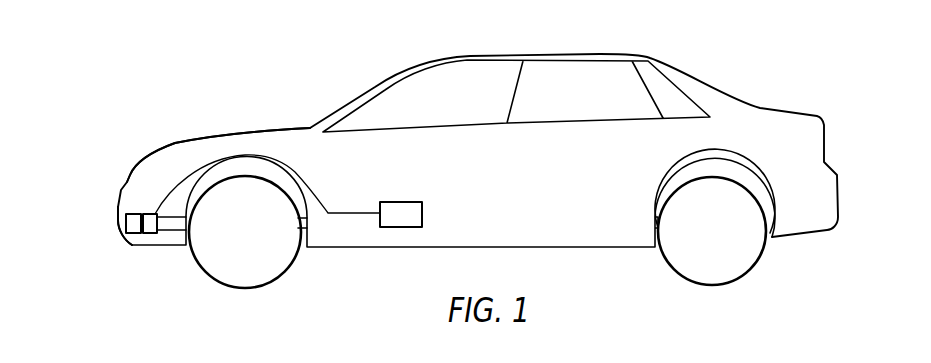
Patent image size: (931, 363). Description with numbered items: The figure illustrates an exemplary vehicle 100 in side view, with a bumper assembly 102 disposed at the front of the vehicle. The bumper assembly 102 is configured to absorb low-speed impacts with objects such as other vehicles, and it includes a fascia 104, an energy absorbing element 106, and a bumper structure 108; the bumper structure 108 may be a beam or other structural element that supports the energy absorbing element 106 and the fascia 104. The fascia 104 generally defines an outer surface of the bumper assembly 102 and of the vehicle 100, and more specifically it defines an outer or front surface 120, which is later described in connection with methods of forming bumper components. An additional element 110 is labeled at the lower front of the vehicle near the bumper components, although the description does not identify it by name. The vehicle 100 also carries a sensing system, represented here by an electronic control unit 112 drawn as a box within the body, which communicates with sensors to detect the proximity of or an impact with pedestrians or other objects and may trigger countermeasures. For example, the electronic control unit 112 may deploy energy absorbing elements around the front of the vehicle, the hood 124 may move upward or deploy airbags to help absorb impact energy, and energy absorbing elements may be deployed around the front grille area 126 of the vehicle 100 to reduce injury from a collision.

The vehicle 100 is at (152, 70).
The bumper assembly 102 is at (115, 183).
The fascia 104 is at (125, 238).
The energy absorbing element 106 is at (133, 228).
The bumper structure 108 is at (150, 230).
The sensor mounting assembly 110 is at (190, 237).
The electronic control unit 112 is at (288, 191).
The front surface 120 is at (120, 217).
The hood 124 is at (240, 133).
The front grille area 126 is at (130, 165).